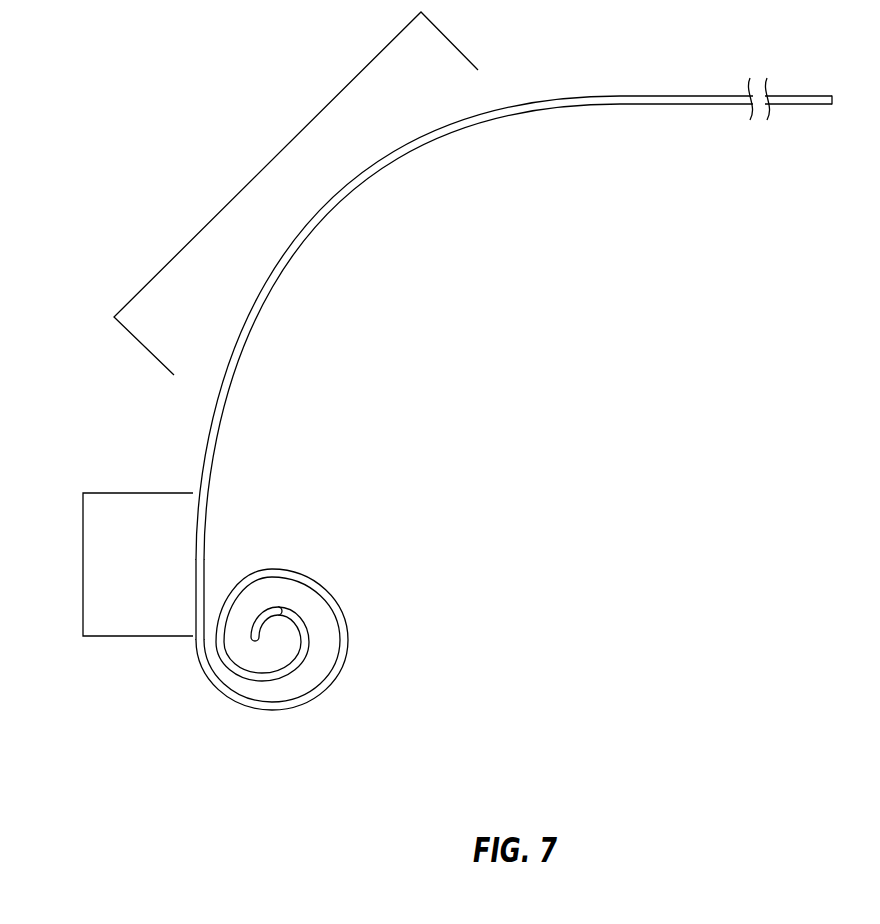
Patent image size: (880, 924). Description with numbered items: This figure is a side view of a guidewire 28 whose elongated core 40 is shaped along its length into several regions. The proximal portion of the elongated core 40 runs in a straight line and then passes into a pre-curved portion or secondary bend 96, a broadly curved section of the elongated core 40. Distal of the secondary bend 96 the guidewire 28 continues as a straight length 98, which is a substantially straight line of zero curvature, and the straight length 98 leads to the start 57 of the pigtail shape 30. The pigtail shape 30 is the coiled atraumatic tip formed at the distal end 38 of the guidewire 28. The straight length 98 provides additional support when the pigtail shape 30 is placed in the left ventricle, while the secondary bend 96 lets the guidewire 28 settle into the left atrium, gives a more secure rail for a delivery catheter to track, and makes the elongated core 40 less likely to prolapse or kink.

The guidewire 28 is at (632, 197).
The pigtail shape 30 is at (347, 648).
The distal end 38 is at (258, 640).
The elongated core 40 is at (588, 97).
The start of the pigtail shape 57 is at (195, 638).
The secondary bend 96 is at (248, 182).
The straight length 98 is at (83, 567).